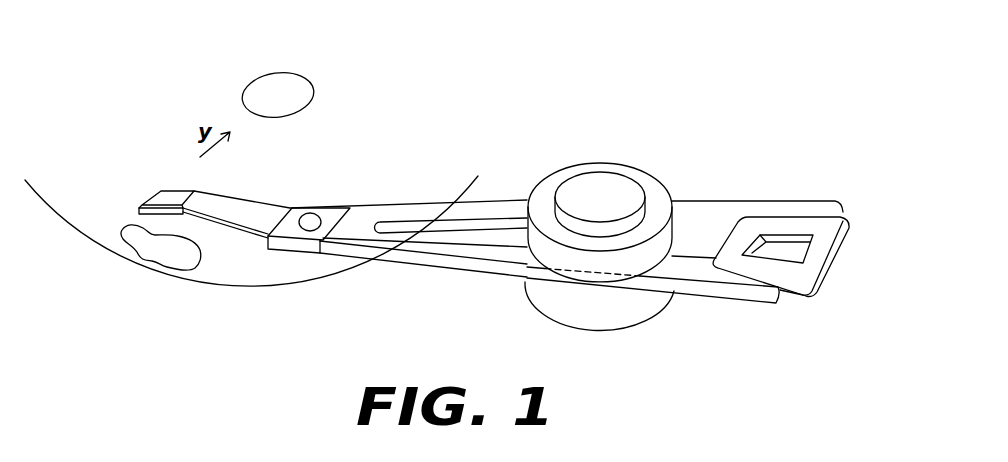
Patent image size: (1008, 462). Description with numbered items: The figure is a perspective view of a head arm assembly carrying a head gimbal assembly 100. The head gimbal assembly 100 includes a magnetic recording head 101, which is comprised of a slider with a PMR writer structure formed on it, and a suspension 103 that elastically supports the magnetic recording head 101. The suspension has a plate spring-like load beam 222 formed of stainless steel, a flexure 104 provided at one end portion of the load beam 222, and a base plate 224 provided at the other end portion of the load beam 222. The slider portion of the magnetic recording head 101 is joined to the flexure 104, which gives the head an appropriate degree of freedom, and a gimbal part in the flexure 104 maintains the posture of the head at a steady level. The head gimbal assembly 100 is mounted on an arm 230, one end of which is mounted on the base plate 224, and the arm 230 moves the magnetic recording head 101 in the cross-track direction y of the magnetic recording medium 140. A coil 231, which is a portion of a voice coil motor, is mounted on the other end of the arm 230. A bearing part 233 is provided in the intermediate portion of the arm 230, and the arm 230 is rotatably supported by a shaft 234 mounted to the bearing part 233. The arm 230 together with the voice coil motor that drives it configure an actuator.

The head gimbal assembly 100 is at (264, 240).
The magnetic recording head 101 is at (164, 199).
The suspension 103 is at (465, 156).
The flexure 104 is at (143, 205).
The magnetic recording medium 140 is at (137, 262).
The load beam 222 is at (268, 212).
The base plate 224 is at (340, 208).
The arm 230 is at (413, 258).
The coil 231 is at (823, 268).
The bearing part 233 is at (548, 184).
The shaft 234 is at (601, 183).